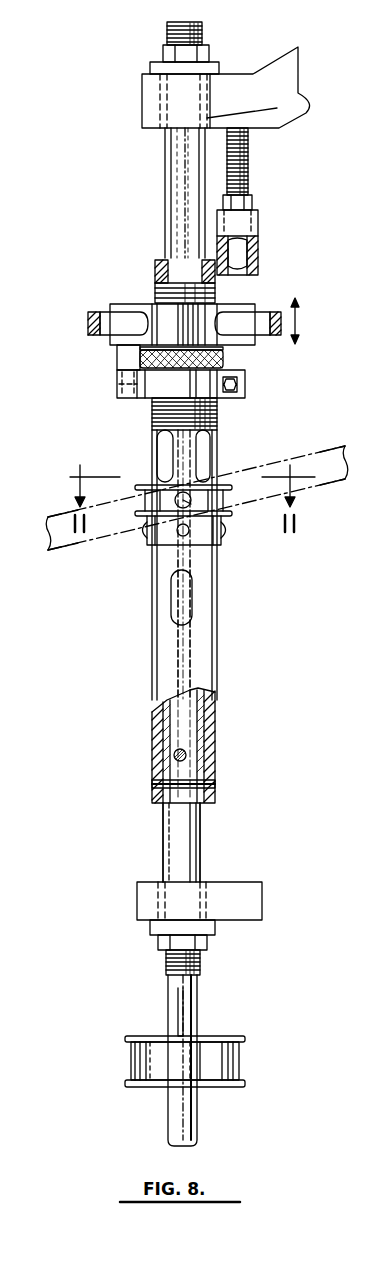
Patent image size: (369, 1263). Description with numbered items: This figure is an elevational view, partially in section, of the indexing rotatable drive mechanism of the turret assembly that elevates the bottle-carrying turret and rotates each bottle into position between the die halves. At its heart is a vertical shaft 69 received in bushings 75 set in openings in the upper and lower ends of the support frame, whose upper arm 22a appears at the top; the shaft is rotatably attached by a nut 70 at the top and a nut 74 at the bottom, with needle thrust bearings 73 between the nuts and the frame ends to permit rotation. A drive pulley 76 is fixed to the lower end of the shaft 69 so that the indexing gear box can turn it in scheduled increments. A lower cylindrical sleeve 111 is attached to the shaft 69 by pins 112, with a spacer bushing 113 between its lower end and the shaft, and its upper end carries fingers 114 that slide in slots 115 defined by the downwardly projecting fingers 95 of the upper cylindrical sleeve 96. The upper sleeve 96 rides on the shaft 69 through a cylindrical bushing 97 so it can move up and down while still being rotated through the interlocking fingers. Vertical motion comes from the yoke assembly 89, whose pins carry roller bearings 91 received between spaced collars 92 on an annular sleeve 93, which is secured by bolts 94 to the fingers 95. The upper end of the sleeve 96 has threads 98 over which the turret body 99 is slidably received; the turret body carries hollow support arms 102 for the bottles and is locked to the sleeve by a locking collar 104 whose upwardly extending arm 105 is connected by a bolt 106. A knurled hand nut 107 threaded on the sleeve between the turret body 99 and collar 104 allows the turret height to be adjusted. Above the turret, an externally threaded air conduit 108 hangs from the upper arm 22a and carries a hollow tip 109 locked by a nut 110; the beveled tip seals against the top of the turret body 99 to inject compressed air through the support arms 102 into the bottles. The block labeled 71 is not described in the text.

The upper arm of the support frame 22a is at (272, 76).
The shaft 69 is at (177, 845).
The nut 70 is at (163, 52).
The block 71 is at (245, 901).
The needle thrust bearing 73 is at (152, 68).
The nut 74 is at (207, 945).
The bushing 75 is at (164, 128).
The drive pulley 76 is at (137, 1036).
The yoke assembly 89 is at (312, 473).
The roller bearing 91 is at (218, 500).
The collar 92 is at (152, 486).
The annular sleeve 93 is at (207, 543).
The bolt 94 is at (180, 534).
The finger 95 is at (183, 468).
The upper cylindrical sleeve 96 is at (178, 420).
The cylindrical bushing 97 is at (157, 263).
The threads 98 is at (157, 292).
The turret body 99 is at (208, 316).
The support arm 102 is at (105, 318).
The locking collar 104 is at (172, 388).
The arm 105 is at (115, 366).
The bolt 106 is at (117, 380).
The knurled hand nut 107 is at (224, 360).
The air conduit 108 is at (248, 158).
The hollow tip 109 is at (232, 226).
The nut 110 is at (238, 204).
The lower cylindrical sleeve 111 is at (172, 663).
The pin 112 is at (205, 781).
The spacer bushing 113 is at (155, 735).
The finger 114 is at (203, 577).
The slot 115 is at (198, 452).